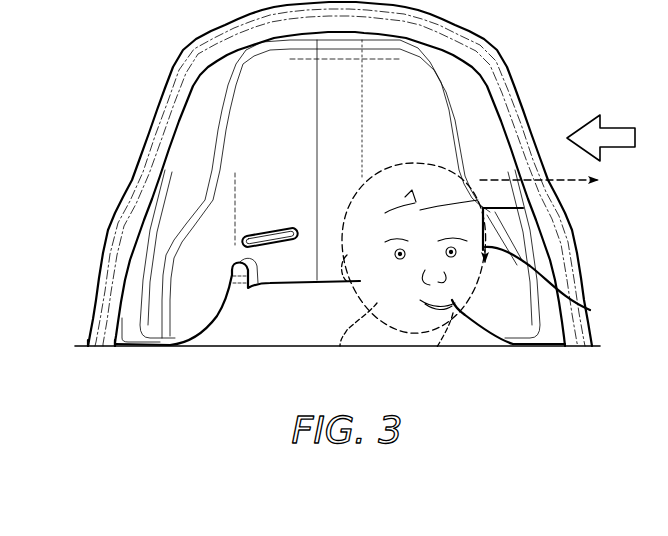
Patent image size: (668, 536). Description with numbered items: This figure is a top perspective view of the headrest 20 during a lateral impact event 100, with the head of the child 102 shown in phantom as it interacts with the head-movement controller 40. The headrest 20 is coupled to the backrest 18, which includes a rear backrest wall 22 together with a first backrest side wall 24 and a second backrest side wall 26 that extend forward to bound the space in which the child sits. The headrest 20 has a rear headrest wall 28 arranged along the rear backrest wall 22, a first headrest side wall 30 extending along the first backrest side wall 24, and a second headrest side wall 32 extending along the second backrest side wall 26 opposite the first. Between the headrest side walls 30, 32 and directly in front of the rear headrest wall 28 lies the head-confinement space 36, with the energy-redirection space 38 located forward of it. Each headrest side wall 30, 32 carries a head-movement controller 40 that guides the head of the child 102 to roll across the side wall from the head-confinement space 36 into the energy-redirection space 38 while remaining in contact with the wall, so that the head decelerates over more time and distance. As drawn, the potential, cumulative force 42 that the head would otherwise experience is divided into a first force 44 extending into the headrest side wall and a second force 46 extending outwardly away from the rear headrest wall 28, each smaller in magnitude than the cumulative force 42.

The backrest 18 is at (160, 107).
The headrest 20 is at (152, 354).
The rear backrest wall 22 is at (313, 32).
The first backrest side wall 24 is at (147, 230).
The second backrest side wall 26 is at (532, 230).
The rear headrest wall 28 is at (392, 90).
The first headrest side wall 30 is at (171, 347).
The second headrest side wall 32 is at (488, 343).
The head-confinement space 36 is at (270, 147).
The energy-redirection space 38 is at (148, 317).
The head-movement controller 40 is at (213, 334).
The potential, cumulative force 42 is at (500, 180).
The first force 44 is at (512, 208).
The second force 46 is at (590, 311).
The lateral impact event 100 is at (617, 128).
The child 102 is at (372, 306).